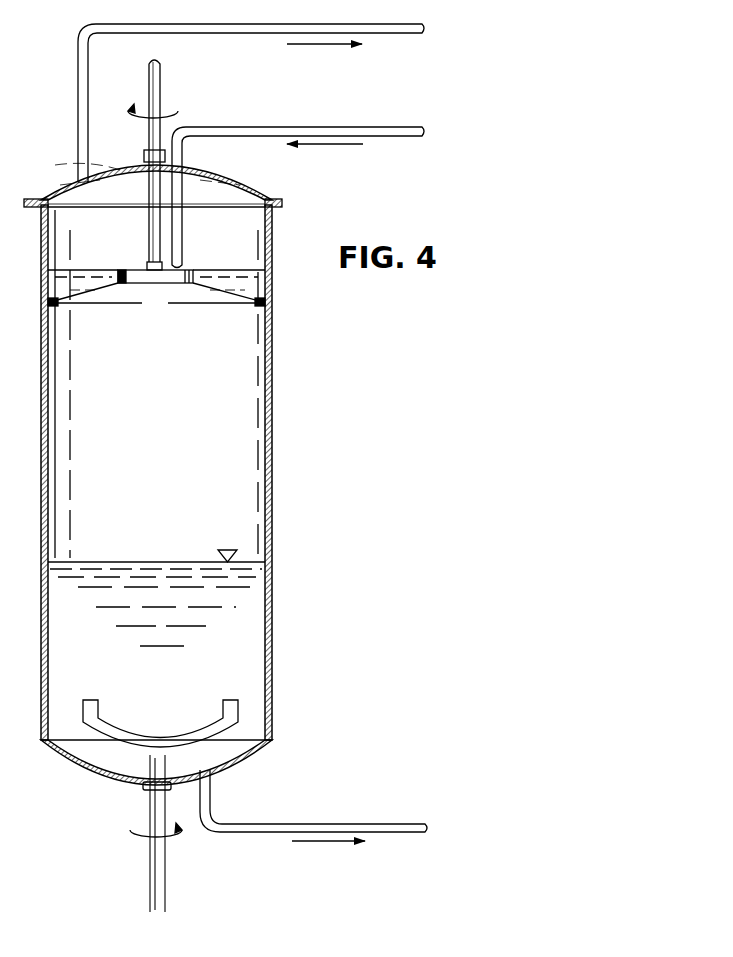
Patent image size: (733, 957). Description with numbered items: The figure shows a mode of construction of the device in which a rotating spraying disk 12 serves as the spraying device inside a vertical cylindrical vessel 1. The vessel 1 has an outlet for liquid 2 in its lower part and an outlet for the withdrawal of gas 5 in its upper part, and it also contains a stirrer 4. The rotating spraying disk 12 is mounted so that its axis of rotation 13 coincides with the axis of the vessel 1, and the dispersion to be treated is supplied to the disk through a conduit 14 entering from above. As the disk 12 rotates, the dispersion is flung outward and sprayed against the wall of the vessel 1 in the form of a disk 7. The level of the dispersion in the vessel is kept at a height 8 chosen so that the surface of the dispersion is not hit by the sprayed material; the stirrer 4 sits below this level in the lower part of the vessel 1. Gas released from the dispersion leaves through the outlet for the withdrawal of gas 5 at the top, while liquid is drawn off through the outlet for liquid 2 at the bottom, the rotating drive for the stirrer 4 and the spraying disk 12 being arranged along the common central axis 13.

The vertical cylindrical vessel 1 is at (271, 421).
The outlet for liquid 2 is at (256, 835).
The stirrer 4 is at (229, 702).
The outlet for the withdrawal of gas 5 is at (240, 25).
The disk 7 is at (156, 294).
The height of the dispersion level 8 is at (247, 636).
The rotating spraying disk 12 is at (137, 284).
The axis of rotation 13 is at (148, 236).
The conduit 14 is at (396, 131).